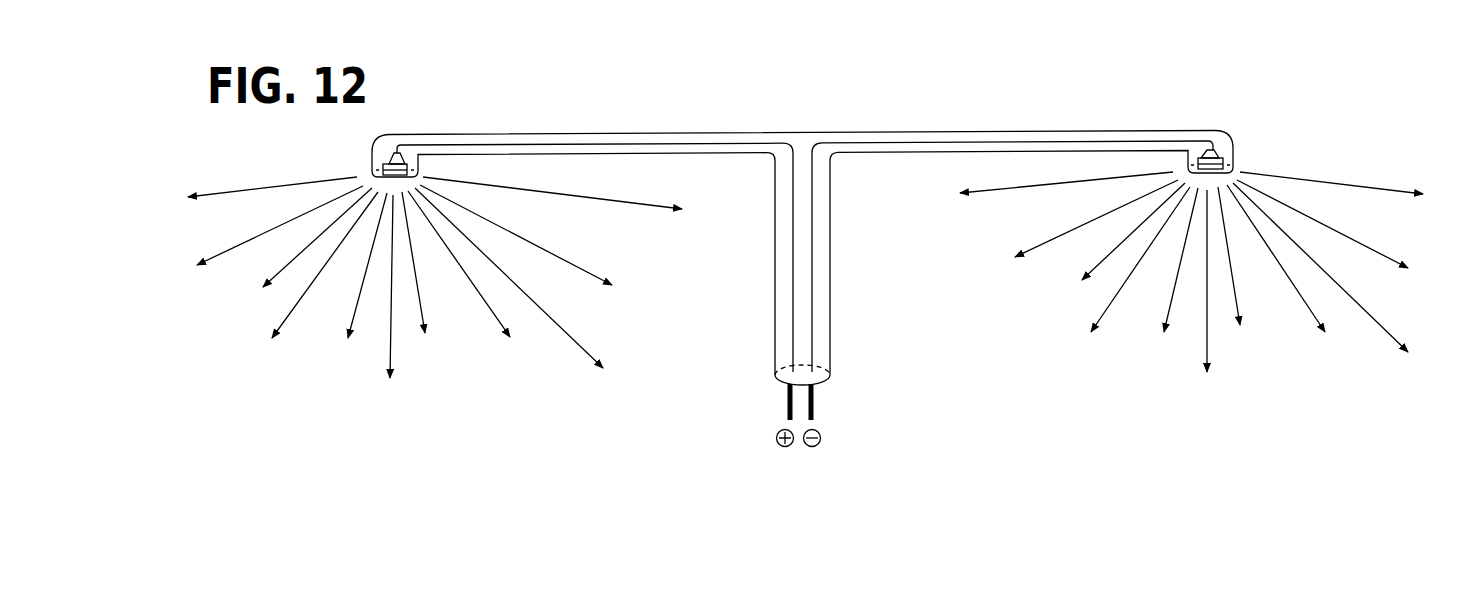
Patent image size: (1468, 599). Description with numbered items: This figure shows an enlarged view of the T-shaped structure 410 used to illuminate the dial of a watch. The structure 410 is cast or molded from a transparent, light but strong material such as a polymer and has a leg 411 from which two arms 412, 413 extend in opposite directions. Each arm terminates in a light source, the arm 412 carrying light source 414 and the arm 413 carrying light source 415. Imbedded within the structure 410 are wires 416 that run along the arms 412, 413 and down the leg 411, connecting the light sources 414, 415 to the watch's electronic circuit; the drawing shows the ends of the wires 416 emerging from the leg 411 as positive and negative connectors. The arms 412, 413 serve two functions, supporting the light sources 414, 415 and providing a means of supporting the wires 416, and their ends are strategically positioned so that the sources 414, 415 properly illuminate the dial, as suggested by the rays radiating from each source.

The T-shaped structure 410 is at (871, 122).
The leg 411 is at (831, 299).
The arm 412 is at (1007, 130).
The arm 413 is at (583, 131).
The light source 414 is at (1234, 157).
The light source 415 is at (372, 168).
The wires 416 is at (797, 228).